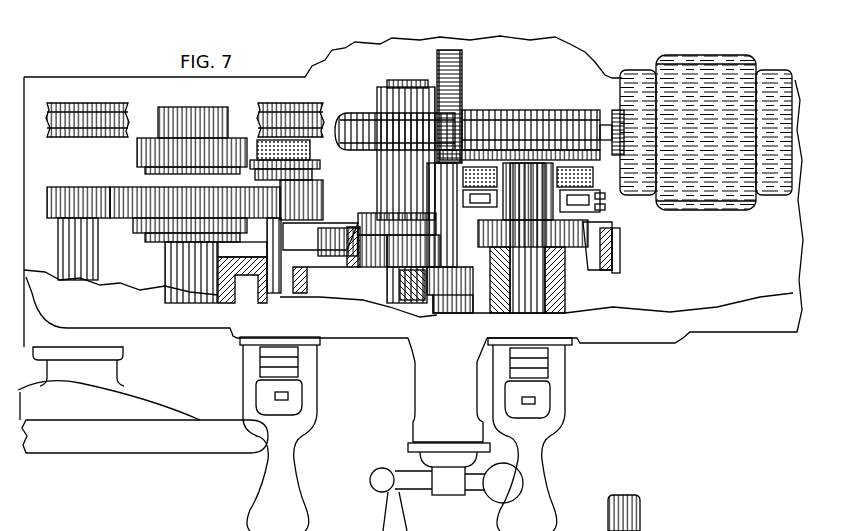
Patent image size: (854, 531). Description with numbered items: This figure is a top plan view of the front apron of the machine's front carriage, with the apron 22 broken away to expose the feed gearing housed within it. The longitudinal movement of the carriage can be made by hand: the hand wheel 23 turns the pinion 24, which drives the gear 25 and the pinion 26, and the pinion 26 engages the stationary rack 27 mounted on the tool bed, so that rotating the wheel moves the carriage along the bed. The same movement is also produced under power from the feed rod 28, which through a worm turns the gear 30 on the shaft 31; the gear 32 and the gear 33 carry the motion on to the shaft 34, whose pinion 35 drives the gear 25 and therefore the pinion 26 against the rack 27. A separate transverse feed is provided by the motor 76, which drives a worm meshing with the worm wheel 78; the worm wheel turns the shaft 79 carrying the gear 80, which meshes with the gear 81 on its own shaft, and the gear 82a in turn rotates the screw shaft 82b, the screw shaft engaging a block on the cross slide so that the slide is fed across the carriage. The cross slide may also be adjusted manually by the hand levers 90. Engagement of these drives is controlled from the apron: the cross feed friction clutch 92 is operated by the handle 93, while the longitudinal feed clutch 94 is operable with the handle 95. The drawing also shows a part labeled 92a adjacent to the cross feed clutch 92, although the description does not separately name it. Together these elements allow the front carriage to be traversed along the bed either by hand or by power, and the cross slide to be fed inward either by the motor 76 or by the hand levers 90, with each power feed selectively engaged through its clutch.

The apron 22 is at (667, 333).
The hand wheel 23 is at (128, 444).
The pinion 24 is at (78, 190).
The gear 25 is at (130, 197).
The pinion 26 is at (193, 107).
The stationary rack 27 is at (296, 105).
The feed rod 28 is at (645, 516).
The gear 30 is at (357, 112).
The shaft 31 is at (387, 158).
The gear 32 is at (378, 213).
The gear 33 is at (347, 268).
The shaft 34 is at (272, 300).
The pinion 35 is at (316, 183).
The motor 76 is at (748, 212).
The worm wheel 78 is at (540, 110).
The shaft 79 is at (567, 293).
The gear 80 is at (617, 272).
The gear 81 is at (418, 250).
The gear 82a is at (433, 245).
The screw shaft 82b is at (463, 67).
The hand levers 90 is at (447, 495).
The cross feed friction clutch 92 is at (622, 250).
The clip 92a is at (602, 207).
The handle 93 is at (540, 450).
The longitudinal feed clutch 94 is at (340, 222).
The handle 95 is at (293, 451).